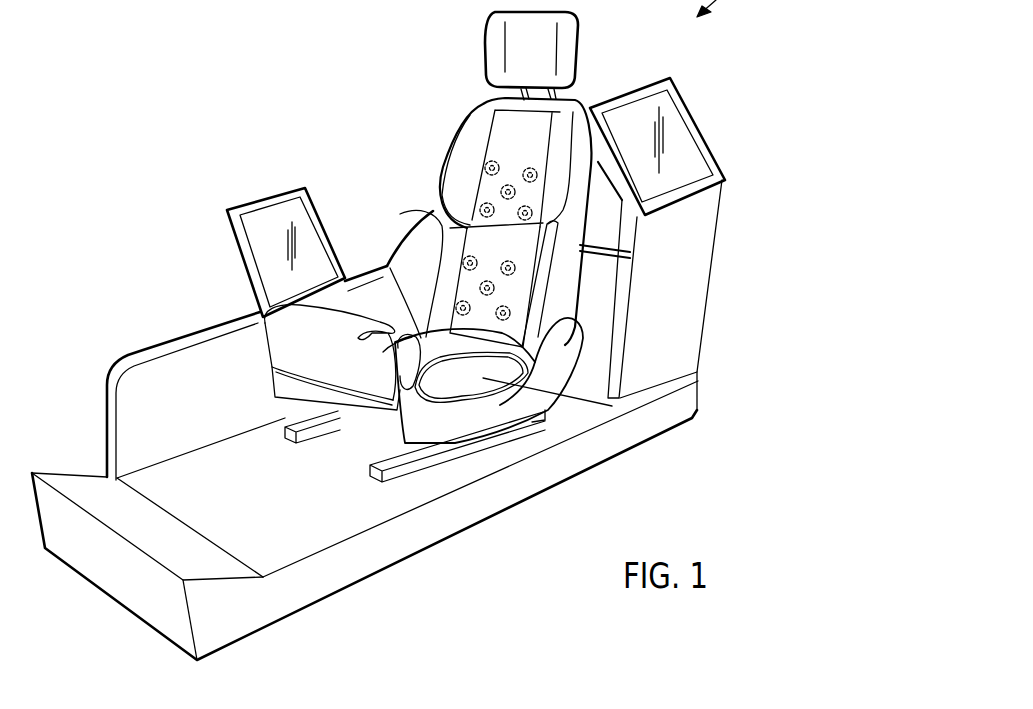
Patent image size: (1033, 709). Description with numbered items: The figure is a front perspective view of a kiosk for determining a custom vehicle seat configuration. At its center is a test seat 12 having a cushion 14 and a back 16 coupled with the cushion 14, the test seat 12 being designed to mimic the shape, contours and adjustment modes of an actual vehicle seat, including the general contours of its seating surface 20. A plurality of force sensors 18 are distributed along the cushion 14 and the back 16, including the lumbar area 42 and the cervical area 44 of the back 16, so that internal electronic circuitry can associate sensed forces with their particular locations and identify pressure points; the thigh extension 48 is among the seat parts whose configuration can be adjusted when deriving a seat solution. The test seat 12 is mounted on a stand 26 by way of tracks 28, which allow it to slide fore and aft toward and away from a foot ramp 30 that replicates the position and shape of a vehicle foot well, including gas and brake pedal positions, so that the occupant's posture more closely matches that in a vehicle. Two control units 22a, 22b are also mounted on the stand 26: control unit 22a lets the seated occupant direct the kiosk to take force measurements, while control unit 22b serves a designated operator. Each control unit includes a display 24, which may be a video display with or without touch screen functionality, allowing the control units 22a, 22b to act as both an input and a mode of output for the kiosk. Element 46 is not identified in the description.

The test seat 12 is at (428, 138).
The cushion 14 is at (492, 400).
The back 16 is at (468, 247).
The force sensors 18 is at (483, 160).
The seating surface 20 is at (526, 143).
The control unit 22a is at (262, 190).
The control unit 22b is at (702, 112).
The display 24 is at (267, 245).
The stand 26 is at (527, 473).
The tracks 28 is at (307, 436).
The foot ramp 30 is at (103, 500).
The lumbar area 42 is at (505, 288).
The cervical area 44 is at (485, 190).
The bolster edge 46 is at (416, 335).
The thigh extension 48 is at (307, 352).